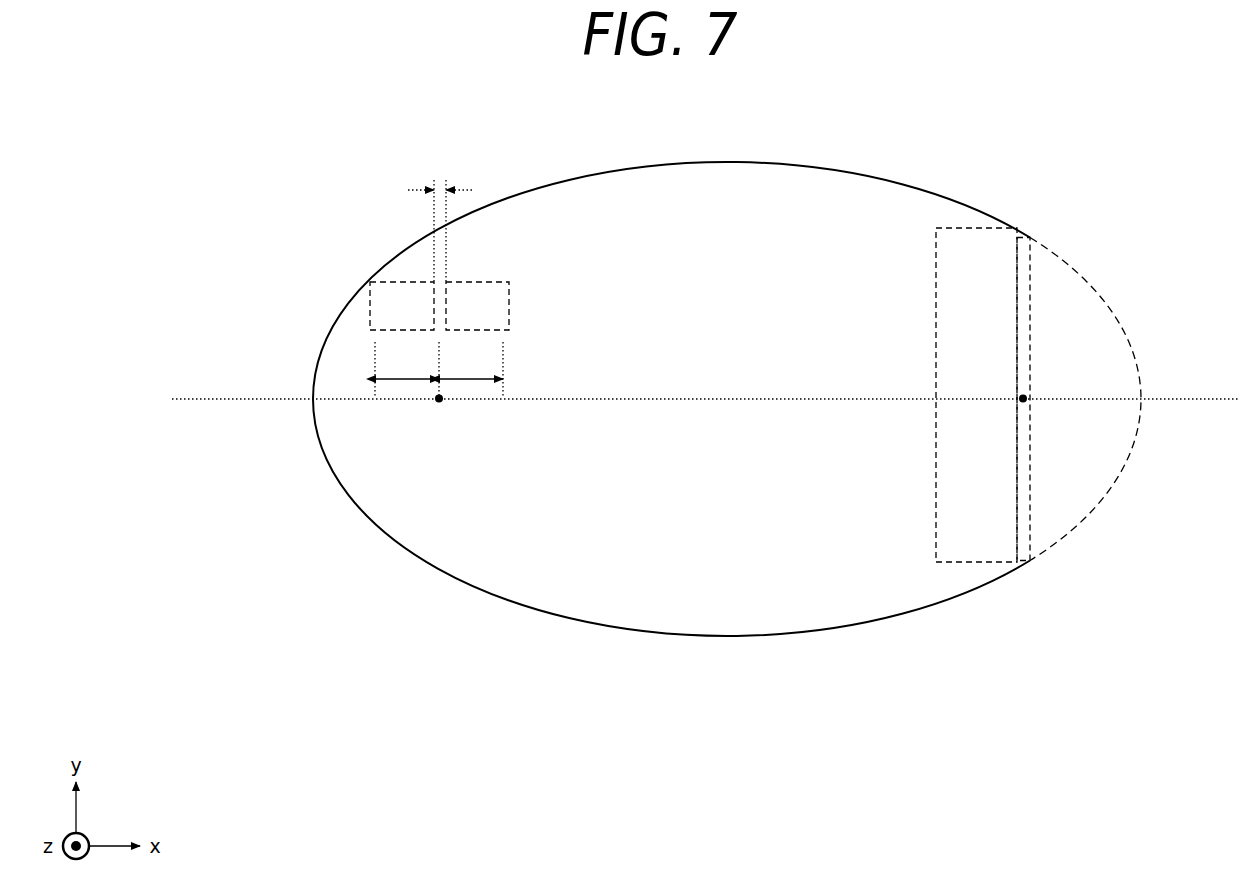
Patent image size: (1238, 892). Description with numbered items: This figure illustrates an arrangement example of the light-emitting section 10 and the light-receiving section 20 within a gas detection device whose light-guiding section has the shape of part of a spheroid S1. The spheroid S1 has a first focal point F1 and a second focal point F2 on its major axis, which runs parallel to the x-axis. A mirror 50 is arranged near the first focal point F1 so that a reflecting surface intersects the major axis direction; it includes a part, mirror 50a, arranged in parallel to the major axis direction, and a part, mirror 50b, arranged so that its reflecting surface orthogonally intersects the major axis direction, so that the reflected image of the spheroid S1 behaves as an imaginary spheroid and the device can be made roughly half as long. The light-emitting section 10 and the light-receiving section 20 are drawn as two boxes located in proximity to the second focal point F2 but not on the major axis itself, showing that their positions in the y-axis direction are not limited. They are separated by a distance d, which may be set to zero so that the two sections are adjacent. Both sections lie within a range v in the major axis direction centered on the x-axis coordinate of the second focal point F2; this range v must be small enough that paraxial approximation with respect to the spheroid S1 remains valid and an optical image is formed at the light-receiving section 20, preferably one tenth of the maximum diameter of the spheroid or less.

The light-emitting section 10 is at (509, 298).
The light-receiving section 20 is at (370, 302).
The mirror 50 is at (1051, 326).
The mirror (part arranged in parallel) 50a is at (970, 227).
The mirror (part arranged to intersect) 50b is at (1033, 290).
The spheroid S1 is at (730, 636).
The first focal point F1 is at (1023, 401).
The second focal point F2 is at (439, 400).
The distance d is at (440, 217).
The range v is at (439, 369).